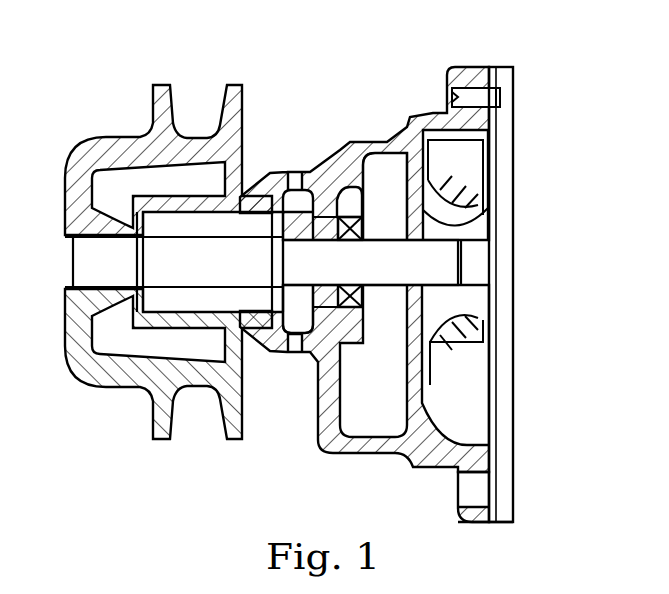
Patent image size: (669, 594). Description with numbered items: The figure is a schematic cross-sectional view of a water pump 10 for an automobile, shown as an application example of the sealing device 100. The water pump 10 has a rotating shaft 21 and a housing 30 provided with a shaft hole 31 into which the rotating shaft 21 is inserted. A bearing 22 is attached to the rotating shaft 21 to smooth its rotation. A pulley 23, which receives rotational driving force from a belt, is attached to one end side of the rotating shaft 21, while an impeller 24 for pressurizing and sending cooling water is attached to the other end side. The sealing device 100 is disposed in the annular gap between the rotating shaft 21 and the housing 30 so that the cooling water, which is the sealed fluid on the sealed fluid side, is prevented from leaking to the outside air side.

The water pump 10 is at (551, 84).
The rotating shaft 21 is at (390, 250).
The bearing 22 is at (157, 270).
The pulley 23 is at (95, 366).
The impeller 24 is at (473, 325).
The housing 30 is at (396, 448).
The shaft hole 31 is at (308, 292).
The sealing device 100 is at (350, 222).